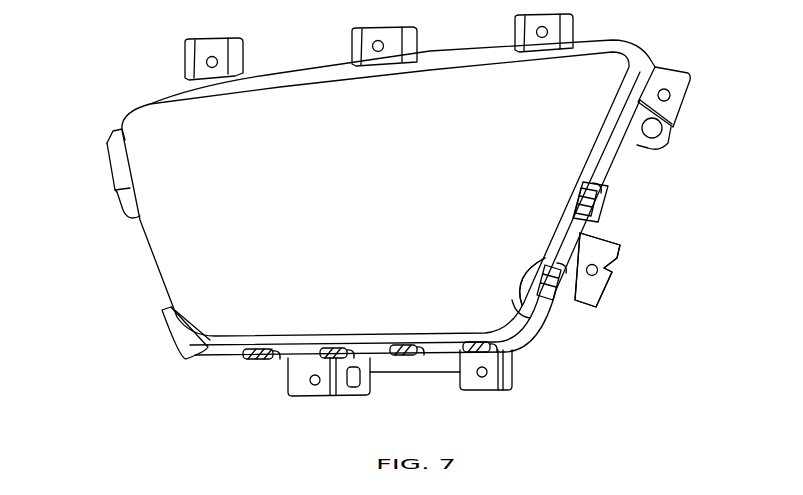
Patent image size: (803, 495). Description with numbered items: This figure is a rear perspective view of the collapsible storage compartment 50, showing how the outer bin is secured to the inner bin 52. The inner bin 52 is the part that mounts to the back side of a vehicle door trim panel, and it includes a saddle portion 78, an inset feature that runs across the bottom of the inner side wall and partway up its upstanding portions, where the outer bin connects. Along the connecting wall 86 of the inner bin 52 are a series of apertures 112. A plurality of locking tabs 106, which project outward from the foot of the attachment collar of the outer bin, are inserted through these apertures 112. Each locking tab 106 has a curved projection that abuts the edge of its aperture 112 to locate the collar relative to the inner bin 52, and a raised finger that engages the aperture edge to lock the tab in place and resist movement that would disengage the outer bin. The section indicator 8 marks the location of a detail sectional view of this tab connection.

The collapsible storage compartment 50 is at (99, 92).
The inner bin 52 is at (297, 88).
The saddle portion 78 is at (605, 178).
The connecting wall 86 is at (576, 233).
The section line 8 is at (562, 308).
The locking tabs 106 is at (258, 362).
The apertures 112 is at (279, 362).